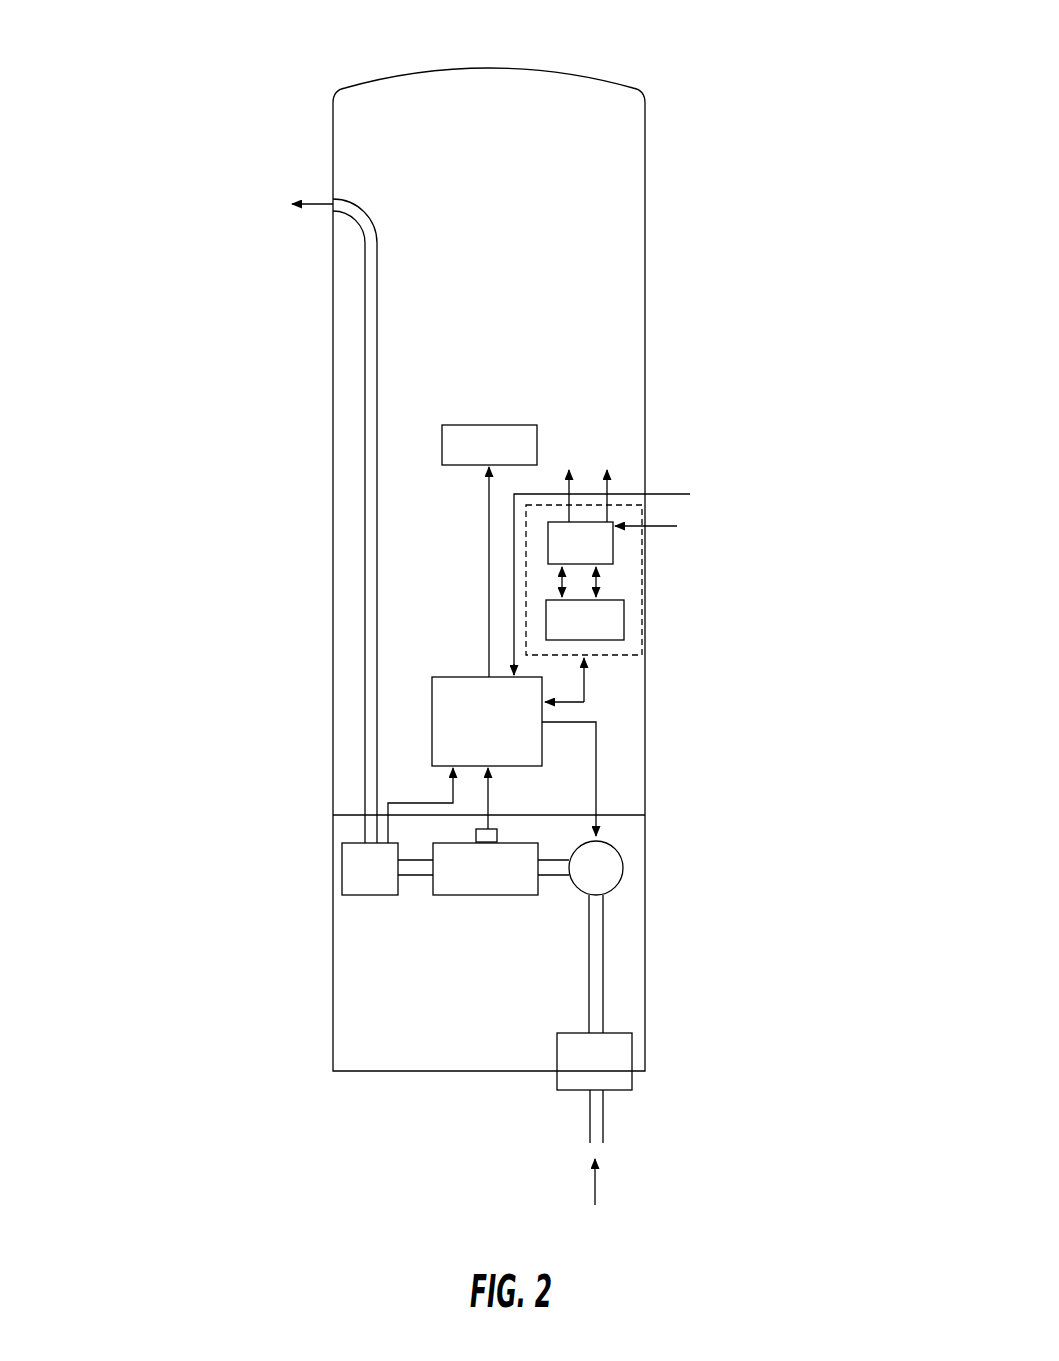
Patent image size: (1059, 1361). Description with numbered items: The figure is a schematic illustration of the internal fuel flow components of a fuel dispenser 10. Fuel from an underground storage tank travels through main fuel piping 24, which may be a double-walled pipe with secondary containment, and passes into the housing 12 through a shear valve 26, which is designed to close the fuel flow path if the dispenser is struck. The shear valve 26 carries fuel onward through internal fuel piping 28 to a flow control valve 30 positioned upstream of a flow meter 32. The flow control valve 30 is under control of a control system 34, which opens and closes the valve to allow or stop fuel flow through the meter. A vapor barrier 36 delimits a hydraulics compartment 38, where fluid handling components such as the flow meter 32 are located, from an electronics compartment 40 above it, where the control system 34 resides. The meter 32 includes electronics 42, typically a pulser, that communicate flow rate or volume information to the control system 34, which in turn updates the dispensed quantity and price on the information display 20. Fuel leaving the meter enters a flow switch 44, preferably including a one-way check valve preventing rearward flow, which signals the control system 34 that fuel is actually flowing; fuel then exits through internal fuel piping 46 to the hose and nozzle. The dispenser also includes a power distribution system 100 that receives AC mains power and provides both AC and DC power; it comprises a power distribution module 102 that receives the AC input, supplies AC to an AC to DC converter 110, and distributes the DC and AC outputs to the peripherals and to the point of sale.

The fuel dispenser 10 is at (713, 60).
The housing 12 is at (591, 73).
The information display 20 is at (488, 424).
The main fuel piping 24 is at (597, 1128).
The shear valve 26 is at (632, 1050).
The internal fuel piping 28 is at (596, 1010).
The flow control valve 30 is at (623, 867).
The flow meter 32 is at (437, 885).
The control system 34 is at (453, 676).
The vapor barrier 36 is at (606, 815).
The hydraulics compartment 38 is at (345, 960).
The electronics compartment 40 is at (638, 265).
The electronics 42 is at (476, 835).
The flow switch 44 is at (342, 870).
The internal fuel piping 46 is at (364, 470).
The power distribution system 100 is at (631, 586).
The power distribution module 102 is at (613, 548).
The AC to DC converter 110 is at (624, 635).